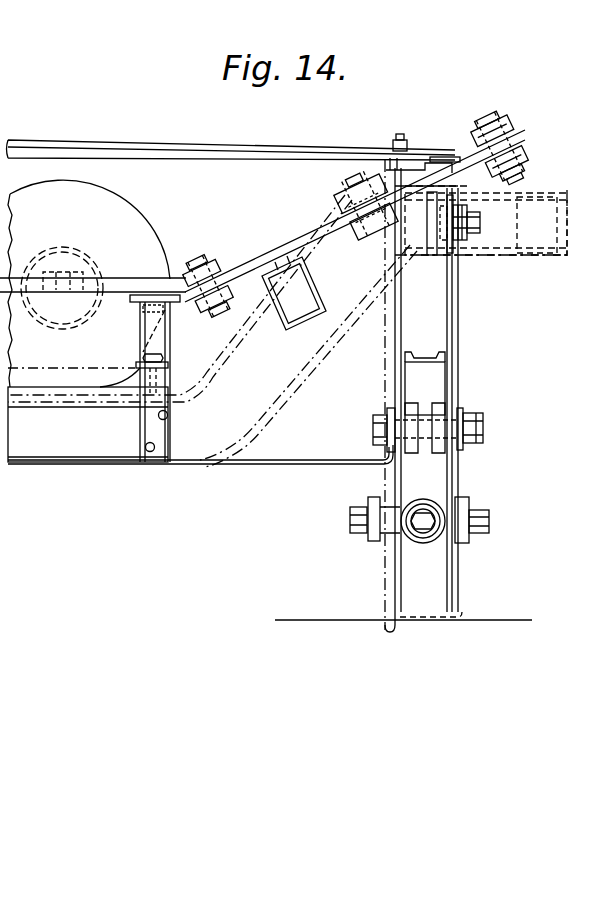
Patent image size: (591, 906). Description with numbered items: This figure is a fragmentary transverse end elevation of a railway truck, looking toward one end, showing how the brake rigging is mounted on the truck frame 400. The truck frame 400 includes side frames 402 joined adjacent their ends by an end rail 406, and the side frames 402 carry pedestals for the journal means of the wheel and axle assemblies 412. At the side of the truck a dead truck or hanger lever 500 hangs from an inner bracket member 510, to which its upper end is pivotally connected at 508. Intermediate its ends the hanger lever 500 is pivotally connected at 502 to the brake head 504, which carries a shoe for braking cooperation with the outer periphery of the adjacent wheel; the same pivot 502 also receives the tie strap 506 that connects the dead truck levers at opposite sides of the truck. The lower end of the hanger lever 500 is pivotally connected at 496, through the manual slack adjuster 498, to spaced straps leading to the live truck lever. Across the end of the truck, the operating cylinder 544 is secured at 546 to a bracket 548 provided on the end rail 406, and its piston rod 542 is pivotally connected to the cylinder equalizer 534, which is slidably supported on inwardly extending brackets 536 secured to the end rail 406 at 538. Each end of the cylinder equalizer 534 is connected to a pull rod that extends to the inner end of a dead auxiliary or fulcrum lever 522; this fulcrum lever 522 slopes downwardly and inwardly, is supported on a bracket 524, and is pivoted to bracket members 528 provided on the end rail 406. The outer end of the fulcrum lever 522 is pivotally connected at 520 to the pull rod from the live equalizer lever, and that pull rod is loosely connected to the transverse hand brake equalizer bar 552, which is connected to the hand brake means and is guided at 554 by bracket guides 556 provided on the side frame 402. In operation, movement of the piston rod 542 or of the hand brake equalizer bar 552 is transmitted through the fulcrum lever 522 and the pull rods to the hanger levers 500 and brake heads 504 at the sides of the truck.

The transverse hand brake equalizer bar 552 is at (126, 113).
The operating cylinder 544 is at (160, 190).
The piston rod 542 is at (84, 268).
The cylinder equalizer 534 is at (149, 285).
The dead auxiliary or fulcrum lever 522 is at (272, 225).
The bracket members 528 is at (332, 200).
The bracket 524 is at (299, 276).
The bracket 548 is at (122, 432).
The cylinder securing means 546 is at (159, 360).
The bracket securing means 538 is at (167, 452).
The end rail 406 is at (48, 442).
The tie strap 506 is at (271, 464).
The inwardly extending brackets 536 is at (214, 367).
The guide 554 is at (427, 161).
The pivot connection 520 is at (504, 101).
The bracket guides 556 is at (521, 170).
The inner bracket members 510 is at (514, 195).
The truck frame 400 is at (537, 225).
The side frames 402 is at (562, 257).
The pivot connection 508 is at (473, 256).
The dead truck or hanger lever 500 is at (460, 328).
The brake head 504 is at (428, 387).
The pivot connection 502 is at (464, 418).
The manual slack adjuster 498 is at (410, 531).
The pivot connection 496 is at (470, 511).
The wheel and axle assemblies 412 is at (440, 592).